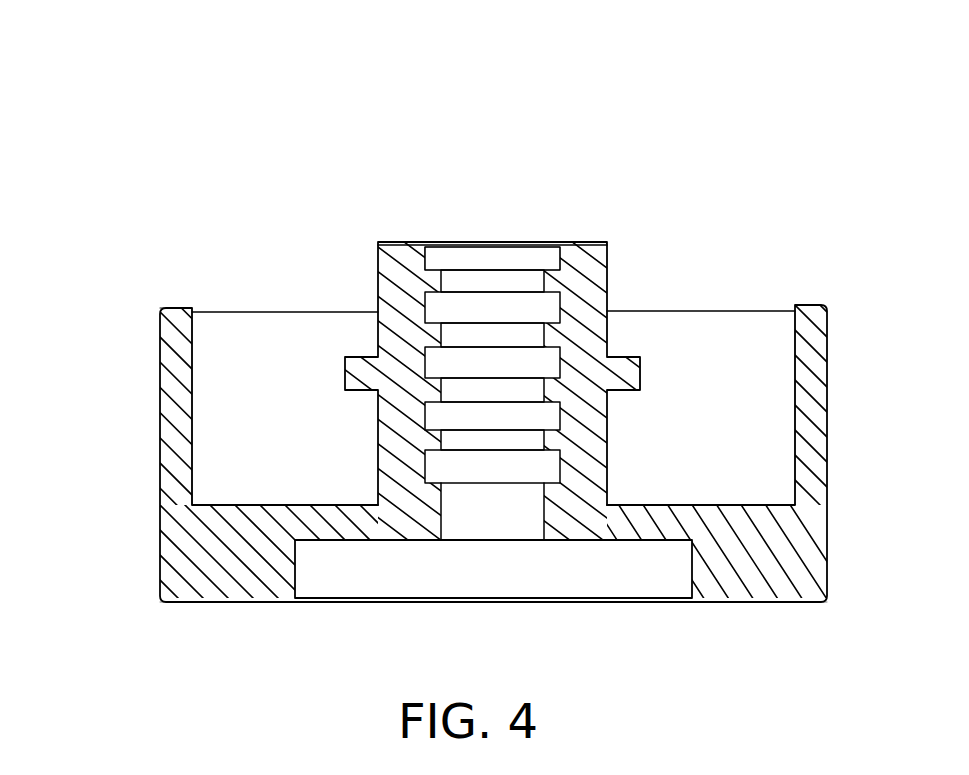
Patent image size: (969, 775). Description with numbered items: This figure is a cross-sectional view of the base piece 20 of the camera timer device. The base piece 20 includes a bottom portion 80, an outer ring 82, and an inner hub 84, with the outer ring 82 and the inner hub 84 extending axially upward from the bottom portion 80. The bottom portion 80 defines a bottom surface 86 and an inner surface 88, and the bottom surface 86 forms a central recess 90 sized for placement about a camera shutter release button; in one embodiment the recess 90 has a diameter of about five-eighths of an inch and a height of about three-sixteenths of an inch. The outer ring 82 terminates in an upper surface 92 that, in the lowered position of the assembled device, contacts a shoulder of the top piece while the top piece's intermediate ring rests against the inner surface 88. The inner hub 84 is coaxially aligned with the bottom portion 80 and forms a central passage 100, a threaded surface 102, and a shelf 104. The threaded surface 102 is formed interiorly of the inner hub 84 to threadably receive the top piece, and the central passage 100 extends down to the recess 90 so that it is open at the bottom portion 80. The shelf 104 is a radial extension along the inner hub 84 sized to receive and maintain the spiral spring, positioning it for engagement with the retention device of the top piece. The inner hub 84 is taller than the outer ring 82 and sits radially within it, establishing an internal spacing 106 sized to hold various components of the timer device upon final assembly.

The base piece 20 is at (570, 52).
The bottom portion 80 is at (198, 557).
The outer ring 82 is at (178, 421).
The inner hub 84 is at (592, 292).
The bottom surface 86 is at (193, 604).
The inner surface 88 is at (219, 506).
The central recess 90 is at (618, 570).
The upper surface 92 is at (173, 308).
The central passage 100 is at (500, 251).
The threaded surface 102 is at (438, 438).
The shelf 104 is at (632, 358).
The internal spacing 106 is at (733, 407).